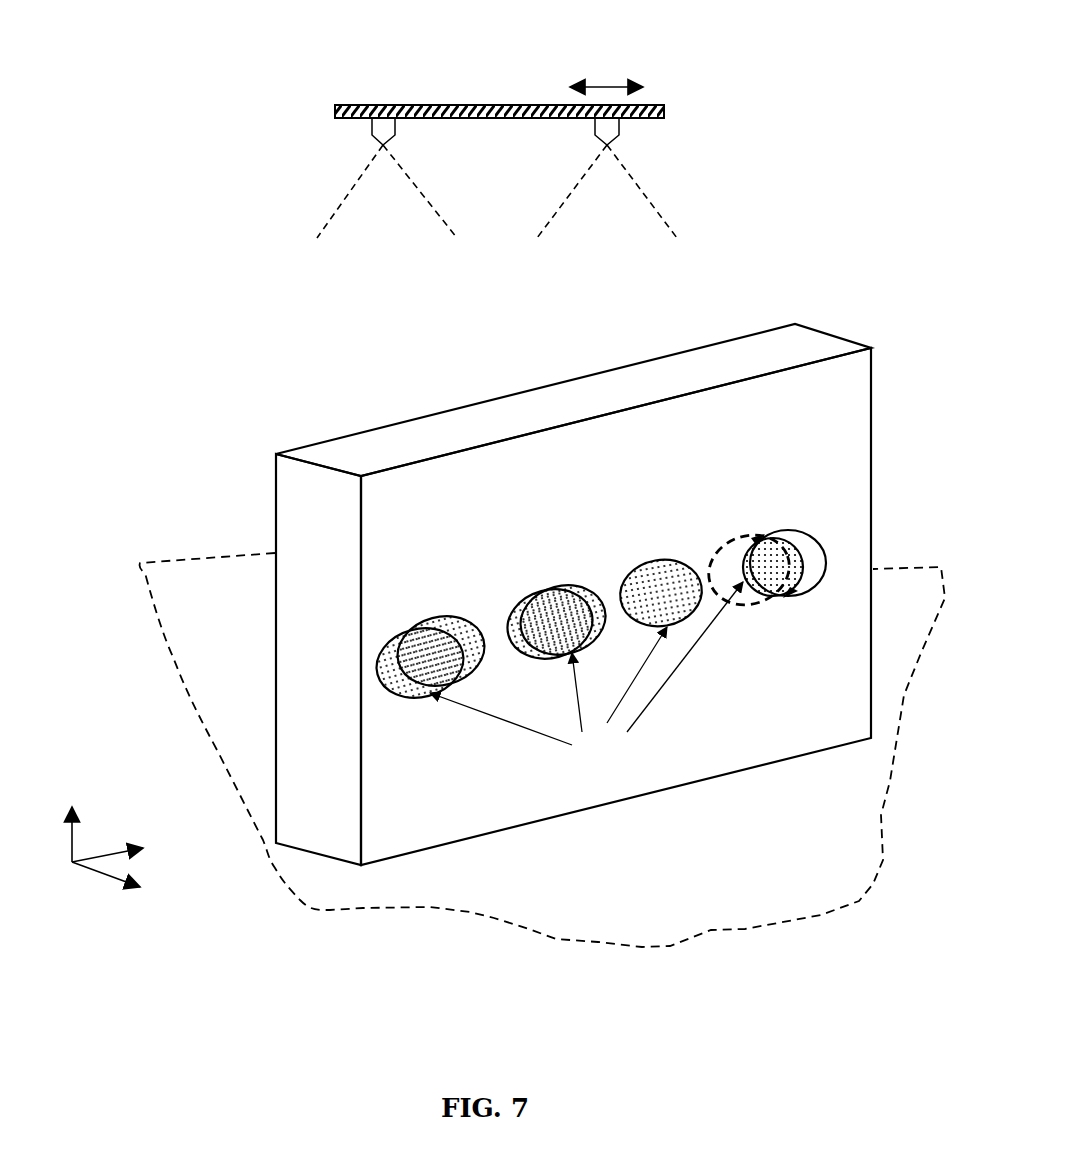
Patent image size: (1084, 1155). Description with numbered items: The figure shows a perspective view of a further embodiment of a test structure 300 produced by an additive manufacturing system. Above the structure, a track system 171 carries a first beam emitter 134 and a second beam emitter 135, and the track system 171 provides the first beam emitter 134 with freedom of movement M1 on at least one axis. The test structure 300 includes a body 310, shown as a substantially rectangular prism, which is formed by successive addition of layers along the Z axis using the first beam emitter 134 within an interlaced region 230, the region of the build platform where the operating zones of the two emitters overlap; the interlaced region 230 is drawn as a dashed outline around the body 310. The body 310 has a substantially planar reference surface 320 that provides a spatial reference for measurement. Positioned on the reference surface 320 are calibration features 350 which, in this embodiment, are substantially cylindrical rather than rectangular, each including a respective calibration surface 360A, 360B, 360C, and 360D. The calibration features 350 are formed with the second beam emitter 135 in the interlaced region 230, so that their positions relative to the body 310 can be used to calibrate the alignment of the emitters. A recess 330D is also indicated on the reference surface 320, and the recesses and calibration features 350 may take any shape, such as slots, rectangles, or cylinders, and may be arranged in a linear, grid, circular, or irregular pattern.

The test structure 300 is at (208, 297).
The track system 171 is at (430, 117).
The freedom of movement M1 is at (605, 82).
The first beam emitter 134 is at (390, 132).
The second beam emitter 135 is at (613, 133).
The body 310 is at (491, 539).
The reference surface 320 is at (683, 452).
The interlaced region 230 is at (212, 663).
The calibration surface 360A is at (440, 643).
The calibration surface 360B is at (557, 620).
The calibration surface 360C is at (664, 590).
The calibration surface 360D is at (768, 560).
The recess 330D is at (810, 548).
The calibration features 350 is at (586, 671).